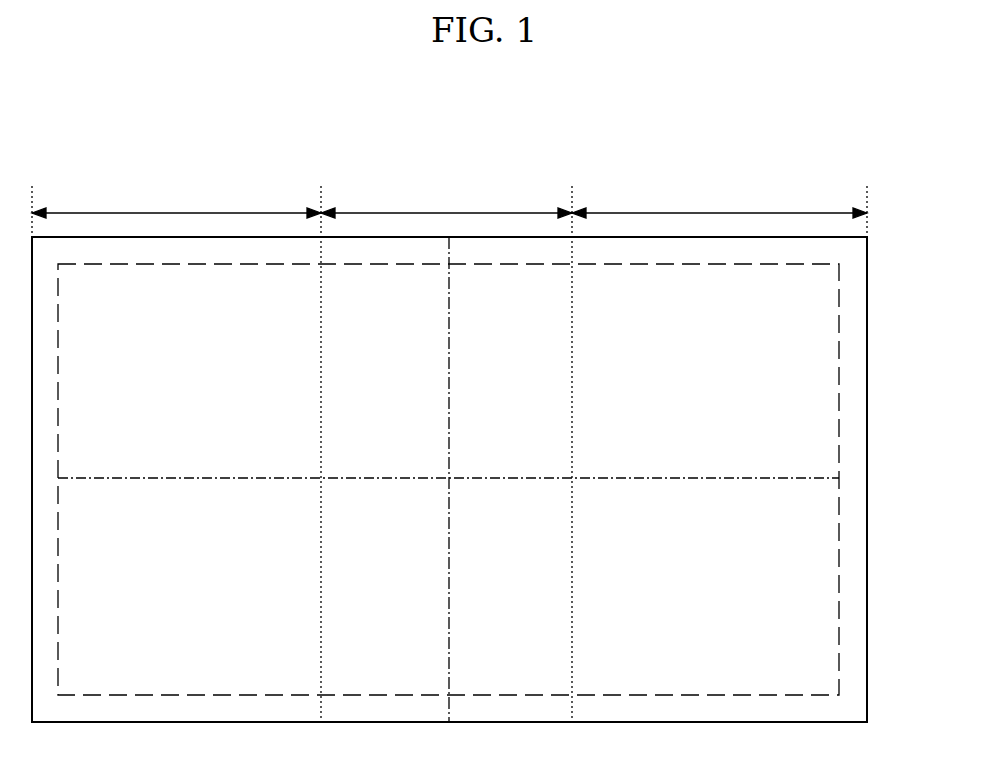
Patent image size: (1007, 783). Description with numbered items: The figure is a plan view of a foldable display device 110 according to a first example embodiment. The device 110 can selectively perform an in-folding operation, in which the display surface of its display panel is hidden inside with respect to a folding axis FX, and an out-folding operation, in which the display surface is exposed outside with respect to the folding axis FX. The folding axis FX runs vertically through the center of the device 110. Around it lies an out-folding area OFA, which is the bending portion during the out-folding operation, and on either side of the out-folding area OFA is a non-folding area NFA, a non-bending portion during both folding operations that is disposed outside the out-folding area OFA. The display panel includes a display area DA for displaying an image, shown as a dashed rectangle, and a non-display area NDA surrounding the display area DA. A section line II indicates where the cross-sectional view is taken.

The foldable display device 110 is at (460, 132).
The display area DA is at (822, 620).
The non-display area NDA is at (853, 678).
The folding axis FX is at (449, 521).
The non-folding area NFA is at (449, 201).
The out-folding area OFA is at (446, 201).
The section line II- II is at (58, 476).